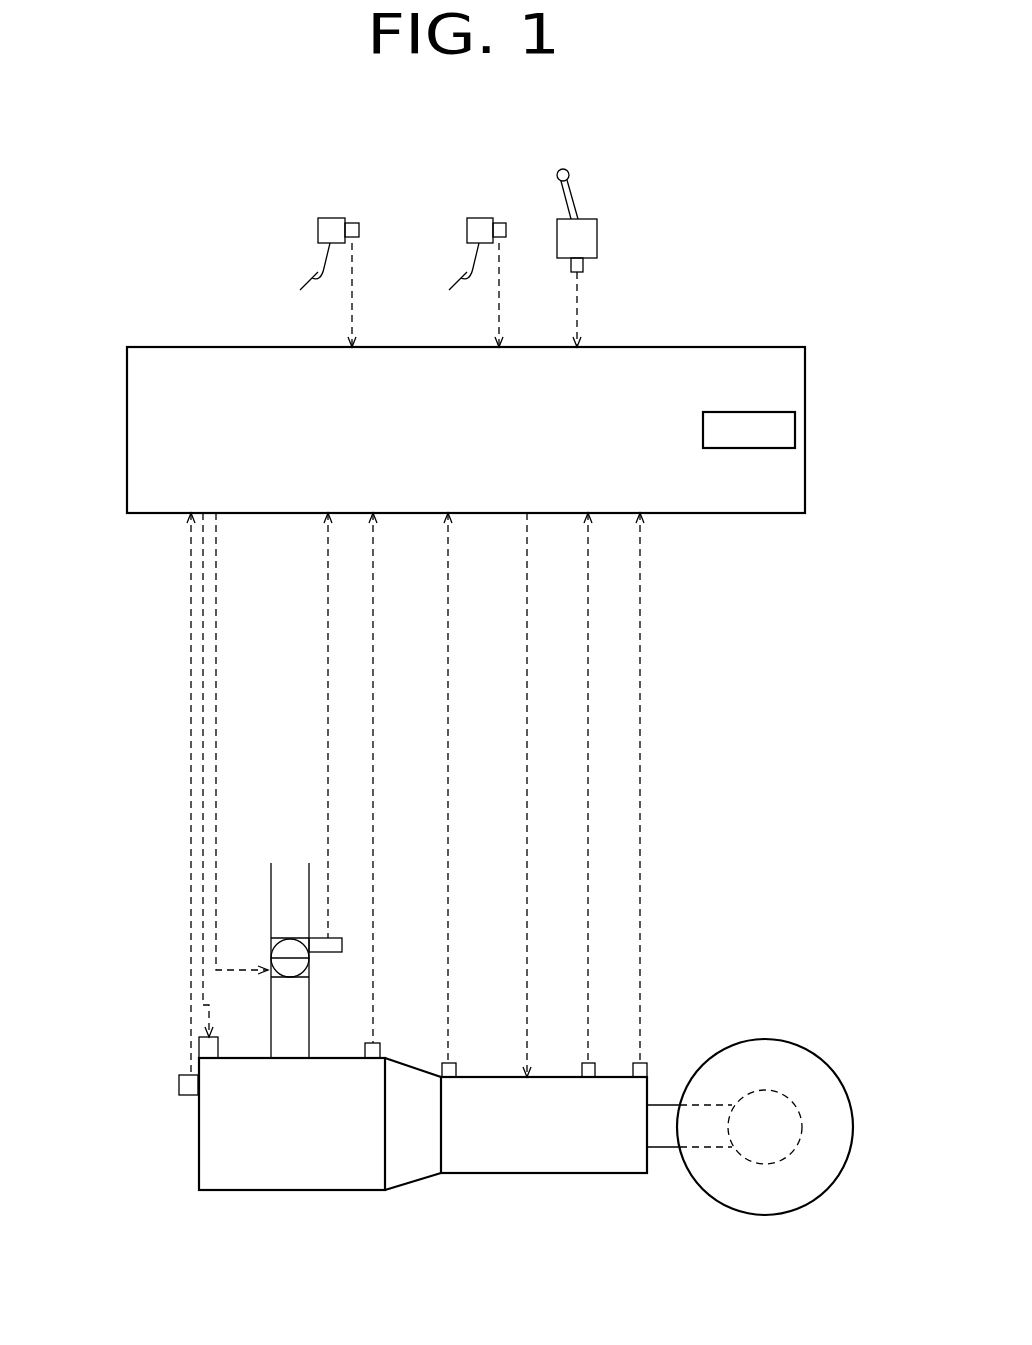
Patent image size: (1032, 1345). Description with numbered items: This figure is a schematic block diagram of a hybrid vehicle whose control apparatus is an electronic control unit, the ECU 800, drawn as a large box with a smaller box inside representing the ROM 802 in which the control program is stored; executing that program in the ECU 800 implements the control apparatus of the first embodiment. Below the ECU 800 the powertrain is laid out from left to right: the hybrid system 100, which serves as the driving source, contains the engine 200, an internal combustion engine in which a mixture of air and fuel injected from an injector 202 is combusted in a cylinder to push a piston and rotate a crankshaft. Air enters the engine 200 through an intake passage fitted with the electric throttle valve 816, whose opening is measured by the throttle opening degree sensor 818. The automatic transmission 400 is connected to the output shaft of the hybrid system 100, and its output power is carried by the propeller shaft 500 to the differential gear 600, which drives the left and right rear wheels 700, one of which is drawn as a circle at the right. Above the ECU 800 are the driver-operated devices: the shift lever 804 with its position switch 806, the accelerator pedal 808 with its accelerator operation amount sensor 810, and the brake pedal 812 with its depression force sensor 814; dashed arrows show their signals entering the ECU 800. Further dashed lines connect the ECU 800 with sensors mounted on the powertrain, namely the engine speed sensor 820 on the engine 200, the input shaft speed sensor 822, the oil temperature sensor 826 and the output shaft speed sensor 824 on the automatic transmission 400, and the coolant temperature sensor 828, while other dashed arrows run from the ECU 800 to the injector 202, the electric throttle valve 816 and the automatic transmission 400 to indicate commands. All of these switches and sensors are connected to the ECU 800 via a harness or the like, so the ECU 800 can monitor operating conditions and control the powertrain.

The hybrid system 100 is at (354, 1225).
The engine 200 is at (252, 1192).
The injector 202 is at (221, 1040).
The automatic transmission 400 is at (528, 1175).
The propeller shaft 500 is at (660, 1148).
The differential gear 600 is at (788, 1087).
The rear wheels 700 is at (765, 1215).
The ECU 800 is at (183, 347).
The ROM 802 is at (755, 412).
The shift lever 804 is at (583, 197).
The position switch 806 is at (585, 270).
The accelerator pedal 808 is at (477, 250).
The accelerator operation amount sensor 810 is at (496, 218).
The brake pedal 812 is at (327, 250).
The depression force sensor 814 is at (347, 218).
The electric throttle valve 816 is at (272, 945).
The throttle opening degree sensor 818 is at (316, 955).
The engine speed sensor 820 is at (179, 1085).
The input shaft speed sensor 822 is at (458, 1063).
The output shaft speed sensor 824 is at (651, 1063).
The oil temperature sensor 826 is at (577, 1063).
The coolant temperature sensor 828 is at (380, 1043).